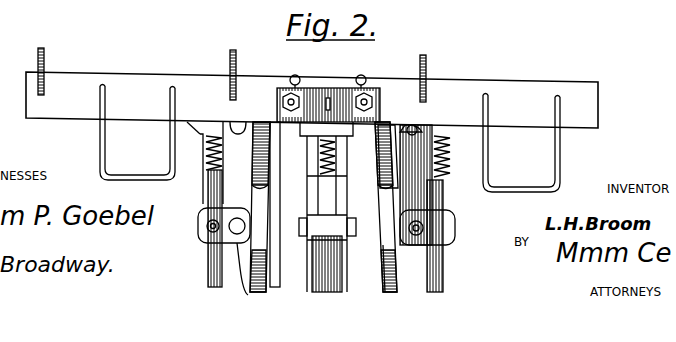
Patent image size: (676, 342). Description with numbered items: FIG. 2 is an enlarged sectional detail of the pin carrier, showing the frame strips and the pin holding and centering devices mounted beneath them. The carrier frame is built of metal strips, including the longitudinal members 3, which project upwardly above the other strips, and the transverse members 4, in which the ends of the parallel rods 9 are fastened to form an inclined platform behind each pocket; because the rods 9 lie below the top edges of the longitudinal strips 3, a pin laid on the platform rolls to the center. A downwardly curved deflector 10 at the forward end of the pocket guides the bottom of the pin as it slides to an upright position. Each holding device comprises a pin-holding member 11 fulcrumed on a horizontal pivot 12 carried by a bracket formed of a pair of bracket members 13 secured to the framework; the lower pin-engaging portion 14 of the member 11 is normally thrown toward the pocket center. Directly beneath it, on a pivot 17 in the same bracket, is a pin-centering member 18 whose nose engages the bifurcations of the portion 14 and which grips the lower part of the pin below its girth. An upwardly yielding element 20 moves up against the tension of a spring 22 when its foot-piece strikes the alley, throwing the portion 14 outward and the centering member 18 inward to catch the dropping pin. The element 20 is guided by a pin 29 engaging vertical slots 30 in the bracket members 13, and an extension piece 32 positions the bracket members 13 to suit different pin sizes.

The longitudinal members 3 is at (46, 62).
The transverse members 4 is at (133, 76).
The parallel rods 9 is at (356, 77).
The deflector 10 is at (106, 153).
The pin-holding member 11 is at (408, 125).
The horizontal pivot 12 is at (383, 135).
The bracket members 13 is at (273, 204).
The pin-engaging portion 14 is at (272, 176).
The pivot 17 is at (239, 218).
The pin-centering member 18 is at (267, 270).
The upwardly yielding element 20 is at (208, 196).
The spring 22 is at (207, 172).
The pin 29 is at (208, 240).
The vertical slots 30 is at (206, 226).
The extension piece 32 is at (378, 88).